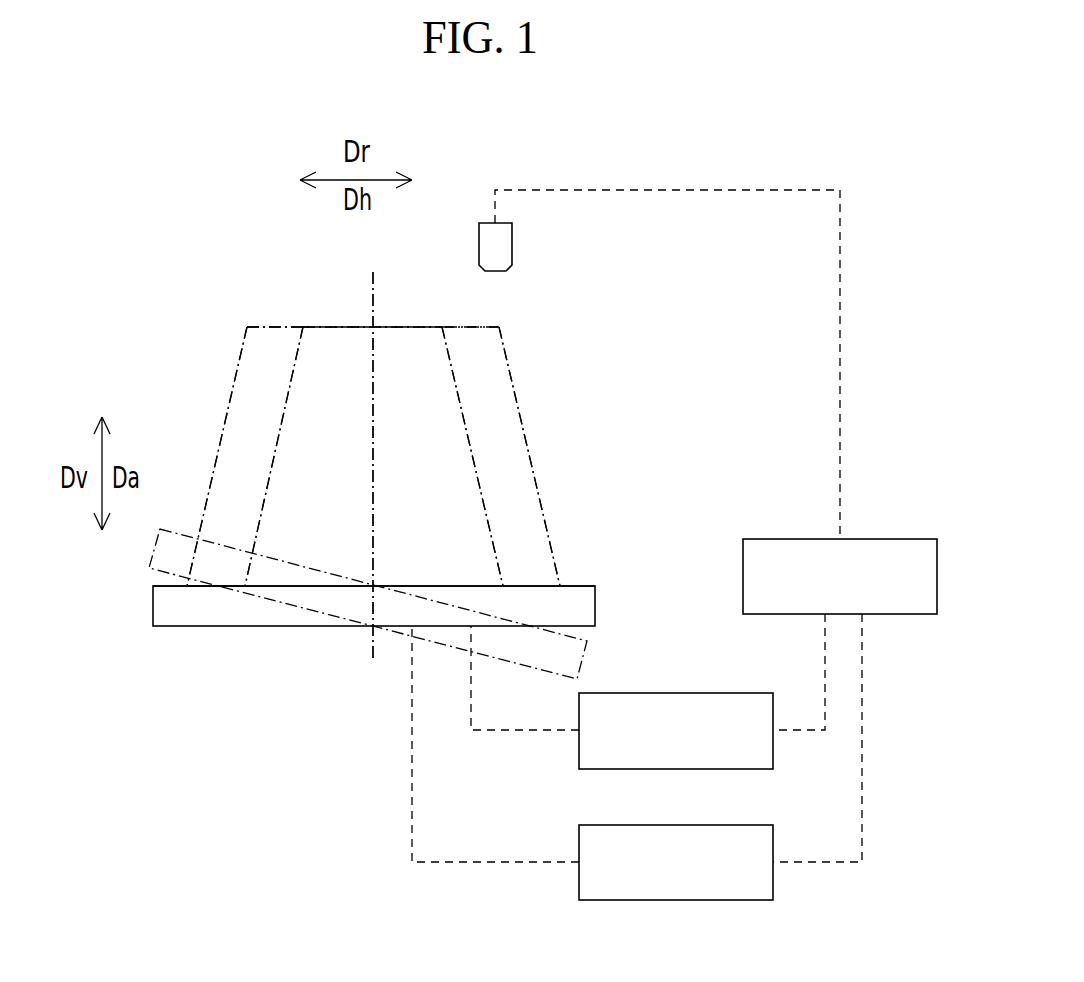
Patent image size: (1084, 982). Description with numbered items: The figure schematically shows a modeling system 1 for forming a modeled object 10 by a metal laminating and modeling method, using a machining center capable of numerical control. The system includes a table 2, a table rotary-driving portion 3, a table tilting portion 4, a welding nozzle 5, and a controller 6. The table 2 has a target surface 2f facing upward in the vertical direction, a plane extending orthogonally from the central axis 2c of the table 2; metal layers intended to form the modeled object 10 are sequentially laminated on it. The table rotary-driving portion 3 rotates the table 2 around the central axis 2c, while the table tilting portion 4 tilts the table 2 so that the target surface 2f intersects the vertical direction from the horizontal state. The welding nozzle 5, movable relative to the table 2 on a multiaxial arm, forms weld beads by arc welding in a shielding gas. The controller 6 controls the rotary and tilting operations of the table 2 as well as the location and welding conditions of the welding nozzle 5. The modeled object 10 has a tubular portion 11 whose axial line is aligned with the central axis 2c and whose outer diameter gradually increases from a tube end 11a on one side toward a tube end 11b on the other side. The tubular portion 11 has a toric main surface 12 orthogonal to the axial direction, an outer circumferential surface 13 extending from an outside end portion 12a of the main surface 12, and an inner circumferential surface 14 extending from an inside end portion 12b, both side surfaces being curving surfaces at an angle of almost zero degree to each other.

The modeling system 1 is at (243, 278).
The table 2 is at (568, 597).
The central axis 2c is at (372, 648).
The target surface 2f is at (440, 586).
The table rotary-driving portion 3 is at (737, 693).
The table tilting portion 4 is at (753, 825).
The welding nozzle 5 is at (512, 258).
The controller 6 is at (900, 539).
The modeled object 10 is at (527, 445).
The tubular portion 11 is at (240, 455).
The tube end 11a is at (311, 327).
The tube end 11b is at (306, 590).
The main surface 12 is at (473, 327).
The outside end portion 12a is at (499, 327).
The inside end portion 12b is at (442, 327).
The outer circumferential surface 13 is at (512, 372).
The inner circumferential surface 14 is at (473, 452).